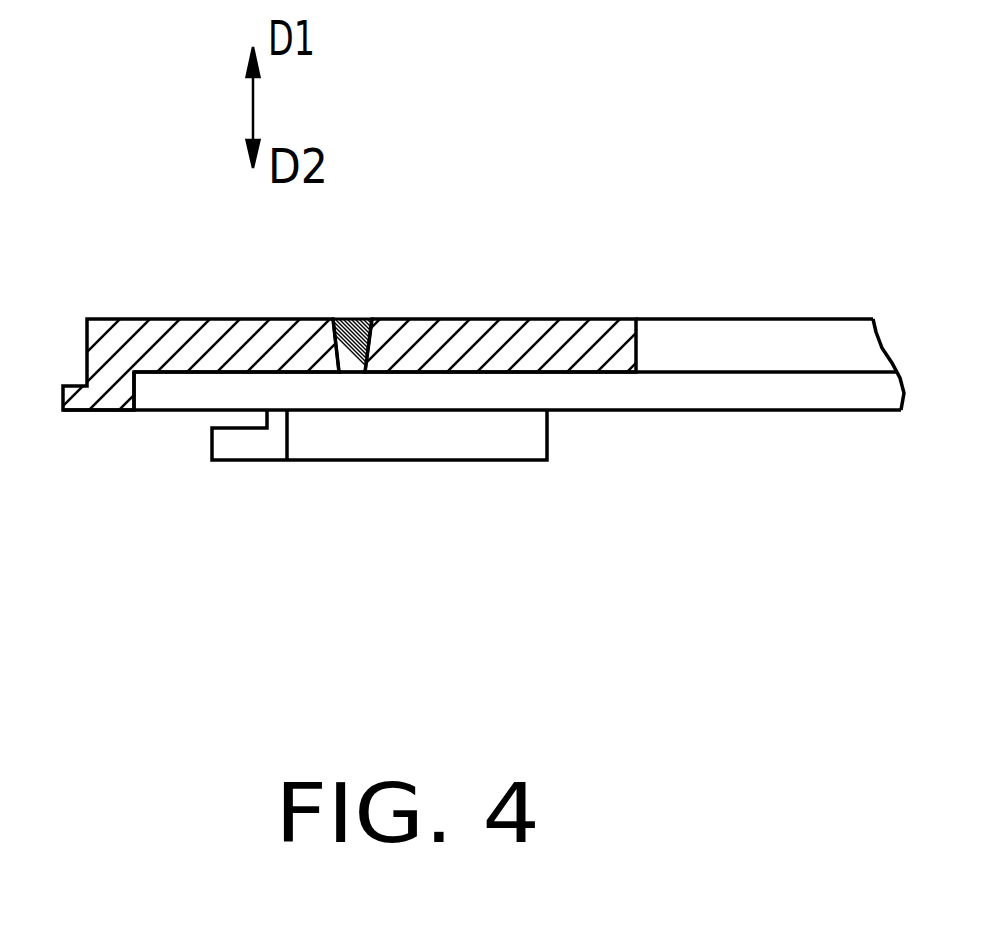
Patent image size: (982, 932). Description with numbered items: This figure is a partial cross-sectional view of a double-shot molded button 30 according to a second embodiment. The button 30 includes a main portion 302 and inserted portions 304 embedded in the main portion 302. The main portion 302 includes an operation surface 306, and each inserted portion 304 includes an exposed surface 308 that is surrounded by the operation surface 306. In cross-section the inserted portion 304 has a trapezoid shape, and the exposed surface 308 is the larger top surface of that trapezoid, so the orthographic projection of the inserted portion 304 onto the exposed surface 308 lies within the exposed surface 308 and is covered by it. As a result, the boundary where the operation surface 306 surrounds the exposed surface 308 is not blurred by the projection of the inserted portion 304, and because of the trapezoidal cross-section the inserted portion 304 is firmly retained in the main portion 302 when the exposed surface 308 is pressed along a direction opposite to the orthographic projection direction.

The double-shot molded button 30 is at (420, 76).
The main portion 302 is at (213, 332).
The inserted portion 304 is at (350, 372).
The operation surface 306 is at (538, 318).
The exposed surface 308 is at (352, 318).